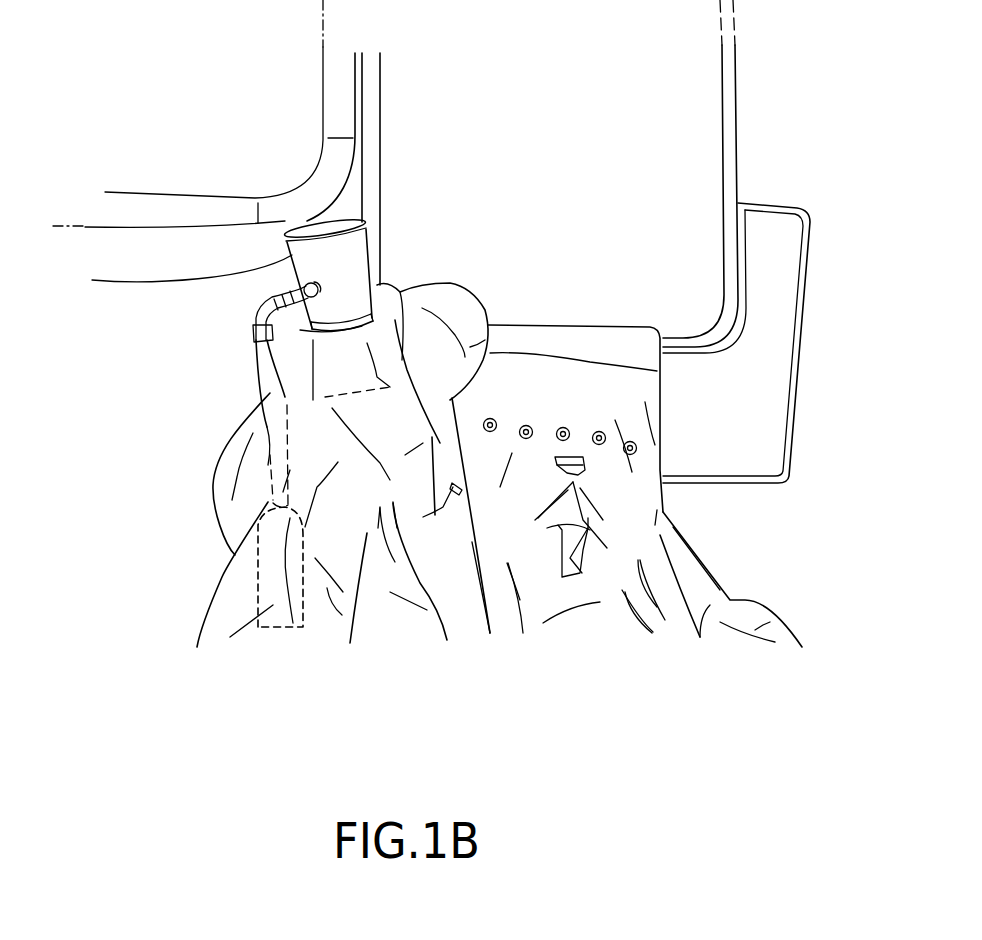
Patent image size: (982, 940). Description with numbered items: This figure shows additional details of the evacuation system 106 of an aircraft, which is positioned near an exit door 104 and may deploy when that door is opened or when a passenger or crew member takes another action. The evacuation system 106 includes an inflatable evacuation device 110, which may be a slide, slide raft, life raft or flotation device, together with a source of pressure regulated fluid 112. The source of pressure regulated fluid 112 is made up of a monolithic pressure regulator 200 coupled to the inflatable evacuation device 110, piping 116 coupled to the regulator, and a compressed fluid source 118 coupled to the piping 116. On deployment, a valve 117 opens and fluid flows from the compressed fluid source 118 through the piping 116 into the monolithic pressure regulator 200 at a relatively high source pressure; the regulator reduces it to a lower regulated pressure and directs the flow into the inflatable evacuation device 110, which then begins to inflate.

The exit door 104 is at (737, 77).
The evacuation system 106 is at (97, 422).
The inflatable evacuation device 110 is at (463, 620).
The source of pressure regulated fluid 112 is at (322, 210).
The piping 116 is at (262, 352).
The valve 117 is at (273, 498).
The compressed fluid source 118 is at (267, 632).
The monolithic pressure regulator 200 is at (360, 272).